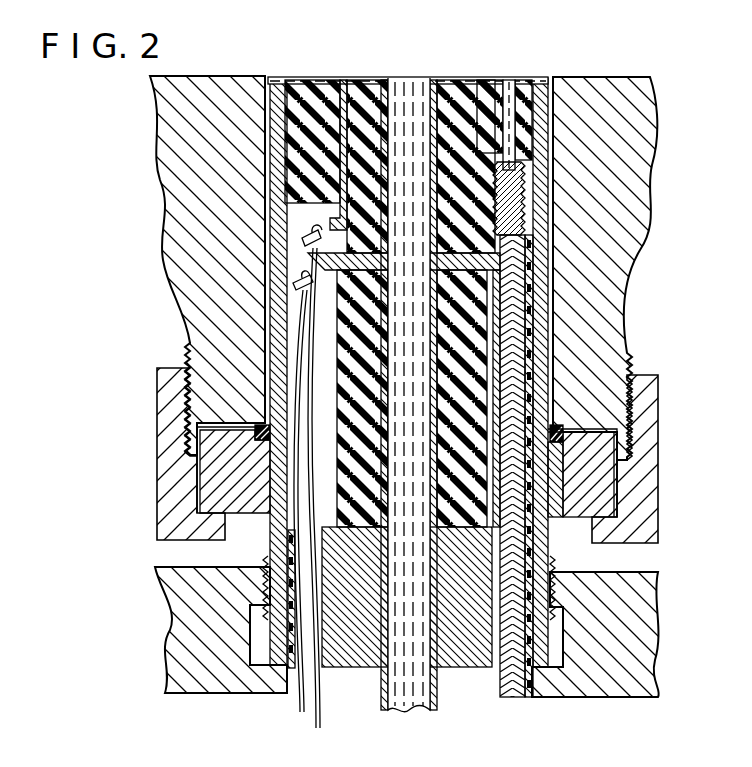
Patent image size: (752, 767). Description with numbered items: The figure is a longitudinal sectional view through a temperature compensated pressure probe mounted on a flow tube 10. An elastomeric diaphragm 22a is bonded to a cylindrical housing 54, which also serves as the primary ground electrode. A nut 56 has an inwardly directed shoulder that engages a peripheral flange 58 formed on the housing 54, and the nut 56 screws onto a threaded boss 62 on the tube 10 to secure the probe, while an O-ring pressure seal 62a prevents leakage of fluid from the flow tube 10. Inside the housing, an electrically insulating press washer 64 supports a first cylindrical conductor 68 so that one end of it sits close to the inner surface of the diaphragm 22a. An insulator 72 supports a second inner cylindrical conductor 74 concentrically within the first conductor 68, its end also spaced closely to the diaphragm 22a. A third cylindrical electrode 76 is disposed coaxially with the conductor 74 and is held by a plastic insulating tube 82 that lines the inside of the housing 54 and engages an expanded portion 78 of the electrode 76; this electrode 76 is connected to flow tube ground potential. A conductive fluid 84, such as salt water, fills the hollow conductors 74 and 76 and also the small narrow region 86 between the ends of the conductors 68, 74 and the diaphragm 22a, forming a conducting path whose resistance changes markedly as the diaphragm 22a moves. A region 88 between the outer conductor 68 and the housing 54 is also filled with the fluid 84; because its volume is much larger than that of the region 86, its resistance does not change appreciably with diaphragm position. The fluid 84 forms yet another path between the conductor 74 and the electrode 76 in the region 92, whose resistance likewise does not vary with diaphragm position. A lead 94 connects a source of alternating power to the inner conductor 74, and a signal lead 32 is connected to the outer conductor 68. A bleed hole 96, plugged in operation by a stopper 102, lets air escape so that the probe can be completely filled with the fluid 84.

The tube 10 is at (645, 110).
The elastomeric diaphragm 22a is at (490, 78).
The signal lead 32 is at (318, 728).
The cylindrical housing 54 is at (543, 212).
The nut 56 is at (162, 494).
The peripheral flange 58 is at (598, 502).
The threaded boss 62 is at (607, 366).
The O-ring pressure seal 62a is at (573, 420).
The electrically insulating press washer 64 is at (318, 80).
The first cylindrical conductor 68 is at (343, 80).
The insulator 72 is at (362, 80).
The second inner cylindrical conductor 74 is at (435, 80).
The third cylindrical electrode 76 is at (436, 440).
The expanded portion 78 is at (460, 668).
The plastic insulating tube 82 is at (292, 652).
The conductive fluid 84 is at (412, 700).
The small narrow region 86 is at (466, 78).
The region 88 is at (274, 78).
The region 92 is at (432, 362).
The lead 94 is at (297, 712).
The bleed hole 96 is at (513, 167).
The stopper 102 is at (530, 260).